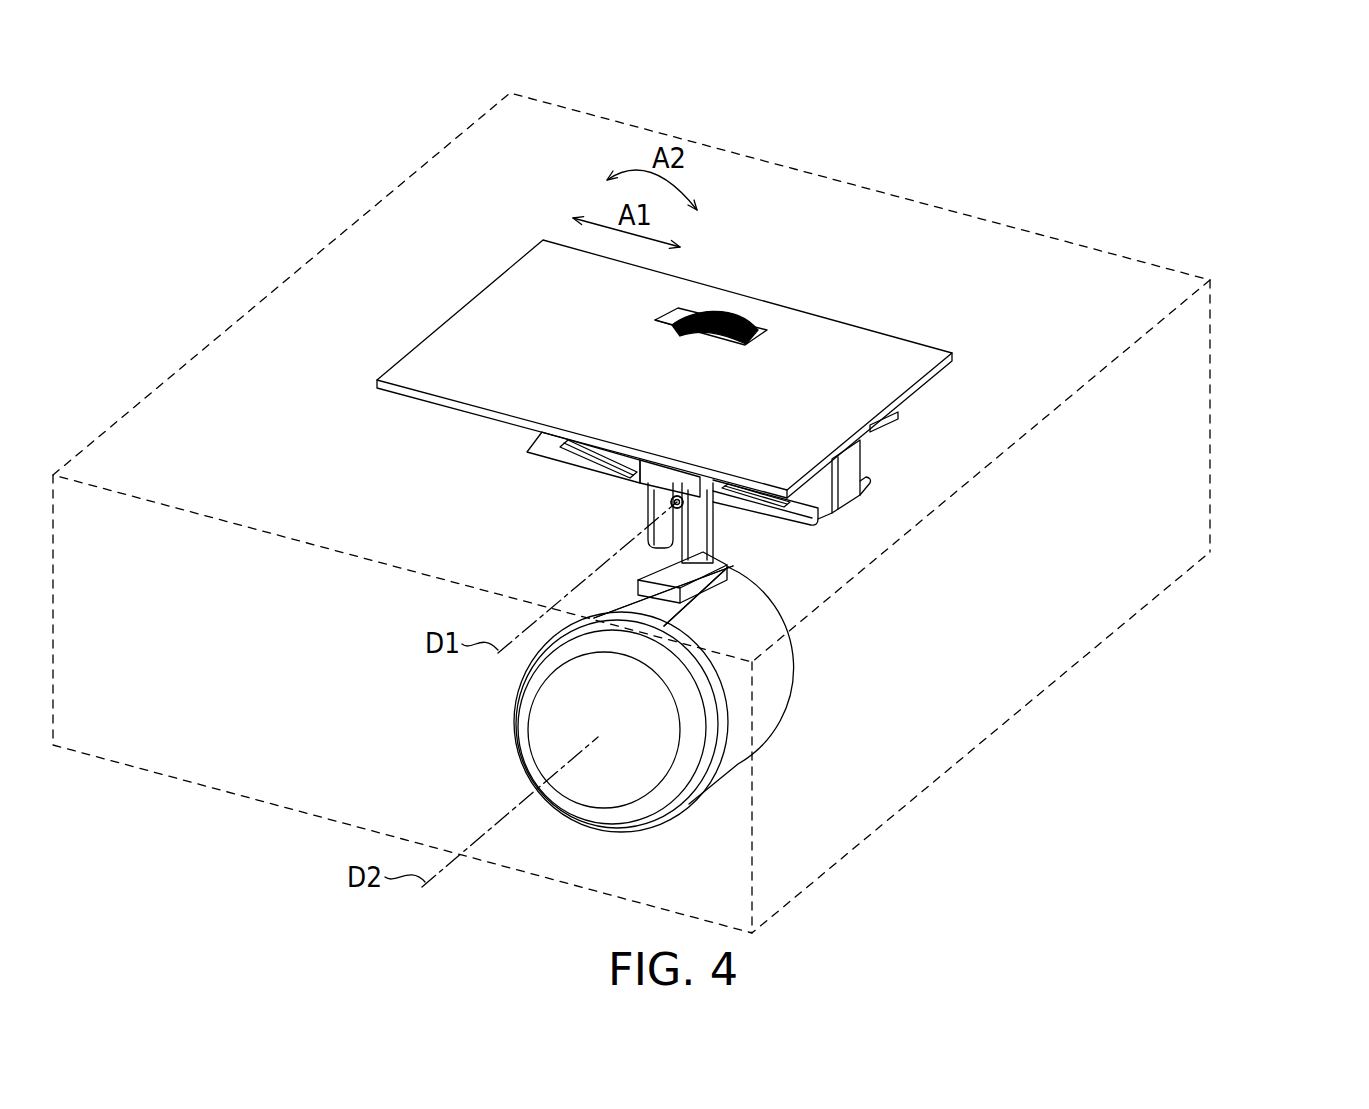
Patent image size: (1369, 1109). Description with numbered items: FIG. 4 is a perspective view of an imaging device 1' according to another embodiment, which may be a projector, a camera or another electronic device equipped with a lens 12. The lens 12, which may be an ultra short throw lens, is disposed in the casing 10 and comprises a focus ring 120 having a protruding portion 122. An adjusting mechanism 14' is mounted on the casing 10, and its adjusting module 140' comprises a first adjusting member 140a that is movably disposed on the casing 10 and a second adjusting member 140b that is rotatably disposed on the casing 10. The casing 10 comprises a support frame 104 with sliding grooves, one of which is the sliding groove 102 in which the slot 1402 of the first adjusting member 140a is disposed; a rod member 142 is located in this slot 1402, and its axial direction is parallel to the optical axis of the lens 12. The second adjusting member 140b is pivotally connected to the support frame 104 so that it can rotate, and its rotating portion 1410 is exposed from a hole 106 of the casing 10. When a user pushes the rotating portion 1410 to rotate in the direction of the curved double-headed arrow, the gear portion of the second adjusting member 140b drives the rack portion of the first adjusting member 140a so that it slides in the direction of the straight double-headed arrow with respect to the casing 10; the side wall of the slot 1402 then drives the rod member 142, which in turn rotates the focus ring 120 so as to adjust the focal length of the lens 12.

The imaging device 1' is at (702, 499).
The casing 10 is at (887, 347).
The hole 106 is at (758, 327).
The rotating portion 1410 is at (714, 316).
The sliding groove 102 is at (782, 512).
The support frame 104 is at (825, 517).
The adjusting mechanism 14' is at (589, 574).
The adjusting module 140' is at (396, 362).
The first adjusting member 140a is at (657, 502).
The second adjusting member 140b is at (668, 320).
The slot 1402 is at (683, 560).
The rod member 142 is at (677, 497).
The focus ring 120 is at (773, 702).
The protruding portion 122 is at (673, 530).
The lens 12 is at (607, 775).